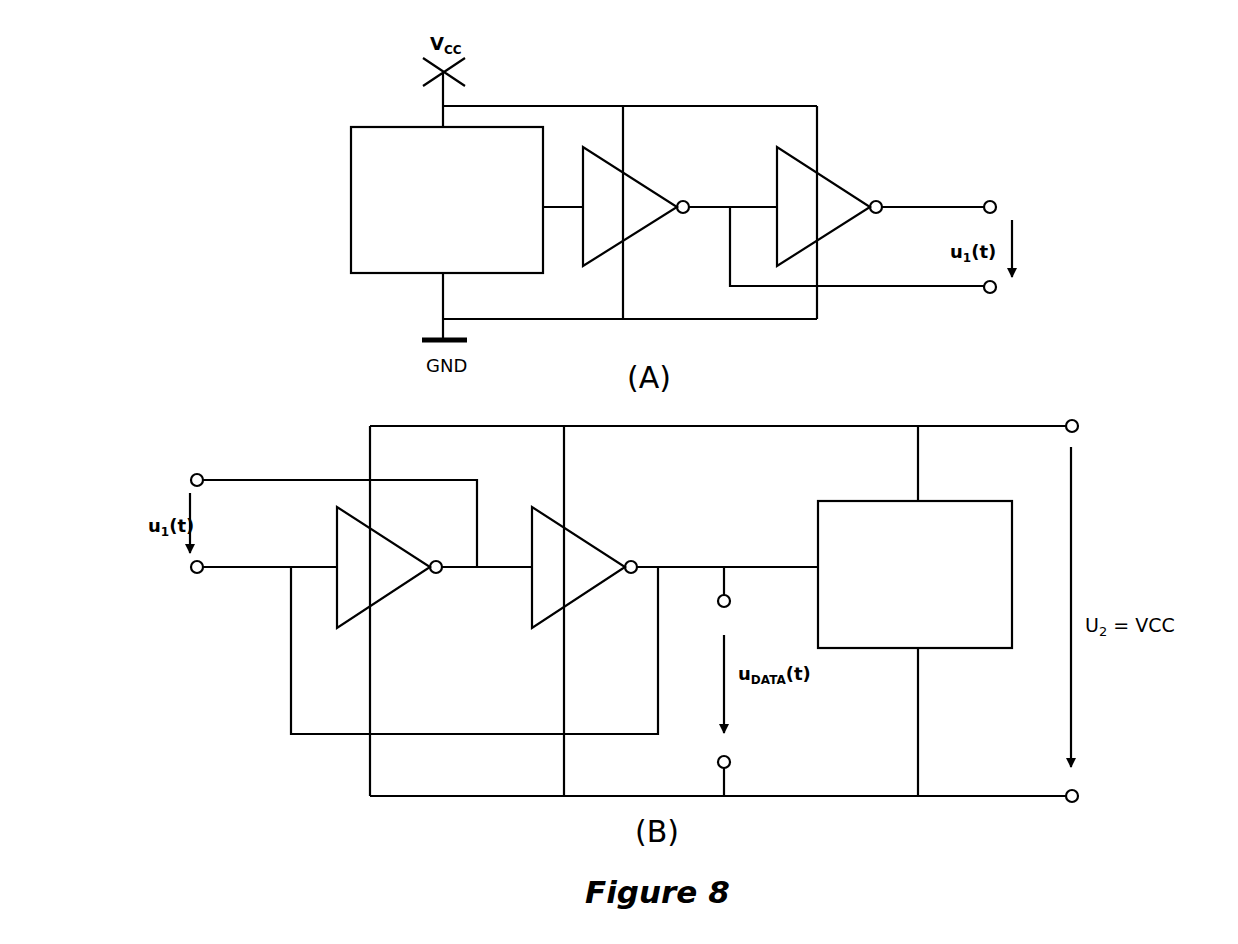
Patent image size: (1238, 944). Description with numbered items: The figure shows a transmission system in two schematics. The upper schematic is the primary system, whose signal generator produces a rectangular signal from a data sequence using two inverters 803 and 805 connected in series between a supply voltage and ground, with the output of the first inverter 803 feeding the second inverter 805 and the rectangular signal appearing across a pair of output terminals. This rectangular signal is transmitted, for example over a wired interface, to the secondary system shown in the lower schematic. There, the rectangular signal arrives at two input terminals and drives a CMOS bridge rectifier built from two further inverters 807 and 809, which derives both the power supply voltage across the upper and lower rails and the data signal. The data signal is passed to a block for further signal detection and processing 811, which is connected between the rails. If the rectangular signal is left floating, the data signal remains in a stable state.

In FIG. 8A, the inverter 803 is at (657, 190).
In FIG. 8A, the inverter 805 is at (840, 187).
In FIG. 8B, the inverter 807 is at (397, 590).
In FIG. 8B, the inverter 809 is at (602, 552).
In FIG. 8B, the signal detection and processing 811 is at (948, 648).